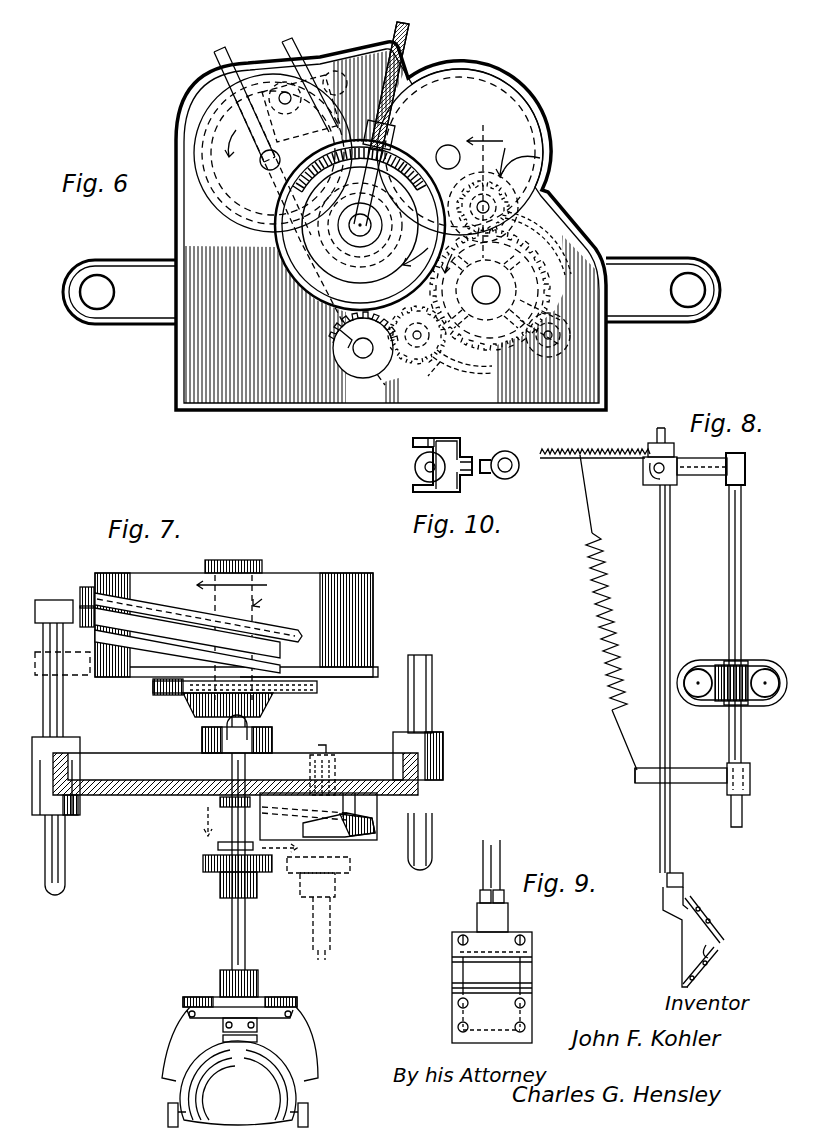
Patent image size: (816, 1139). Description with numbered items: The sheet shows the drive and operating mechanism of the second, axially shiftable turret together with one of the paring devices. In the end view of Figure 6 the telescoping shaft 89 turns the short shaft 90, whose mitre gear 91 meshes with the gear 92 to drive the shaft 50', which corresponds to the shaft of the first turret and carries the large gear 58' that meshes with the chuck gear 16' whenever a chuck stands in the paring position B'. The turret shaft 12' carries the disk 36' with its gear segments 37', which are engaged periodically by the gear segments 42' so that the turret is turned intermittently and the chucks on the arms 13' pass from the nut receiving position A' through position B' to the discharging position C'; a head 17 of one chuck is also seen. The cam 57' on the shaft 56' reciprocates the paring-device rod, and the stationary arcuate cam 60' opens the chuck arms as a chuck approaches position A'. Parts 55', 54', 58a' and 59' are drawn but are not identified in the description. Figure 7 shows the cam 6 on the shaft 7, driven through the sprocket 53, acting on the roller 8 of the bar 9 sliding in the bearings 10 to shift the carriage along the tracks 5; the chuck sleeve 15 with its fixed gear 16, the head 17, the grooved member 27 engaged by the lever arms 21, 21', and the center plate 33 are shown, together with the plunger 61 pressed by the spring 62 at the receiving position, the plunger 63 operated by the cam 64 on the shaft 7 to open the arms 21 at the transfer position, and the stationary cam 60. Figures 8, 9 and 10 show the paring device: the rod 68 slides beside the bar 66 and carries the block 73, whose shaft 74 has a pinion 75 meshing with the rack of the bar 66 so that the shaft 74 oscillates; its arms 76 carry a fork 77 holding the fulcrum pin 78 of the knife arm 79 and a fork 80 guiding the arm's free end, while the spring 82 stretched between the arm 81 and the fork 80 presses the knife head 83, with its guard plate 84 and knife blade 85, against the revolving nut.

In FIG. 6, the wheel 55' is at (273, 169).
In FIG. 6, the shaft 56' is at (299, 216).
In FIG. 6, the cam 57' is at (273, 153).
In FIG. 6, the large gear 58' is at (326, 225).
In FIG. 6, the pinion 58a' is at (360, 376).
In FIG. 6, the hub 54' is at (360, 237).
In FIG. 6, the shaft 50' is at (373, 232).
In FIG. 6, the gear 92 is at (327, 175).
In FIG. 6, the mitre gear 91 is at (393, 158).
In FIG. 6, the short shaft 90 is at (393, 127).
In FIG. 6, the telescoping shaft 89 is at (409, 36).
In FIG. 6, the ring 59' is at (461, 152).
In FIG. 6, the head 17 is at (469, 189).
In FIG. 7, the head 17 is at (276, 999).
In FIG. 6, the gear segments 42' is at (508, 182).
In FIG. 6, the nut receiving position A' is at (535, 167).
In FIG. 6, the gear segments 37' is at (538, 240).
In FIG. 6, the disk 36' is at (490, 290).
In FIG. 6, the shaft 12' is at (486, 290).
In FIG. 6, the arms 13' is at (486, 299).
In FIG. 6, the paring position B' is at (417, 353).
In FIG. 6, the fixed gear 16' is at (433, 381).
In FIG. 6, the stationary arcuate cam 60' is at (462, 375).
In FIG. 6, the discharging or transferring position C' is at (576, 328).
In FIG. 7, the tracks or rods 5 is at (432, 709).
In FIG. 7, the cam 6 is at (276, 628).
In FIG. 7, the shaft 7 is at (260, 595).
In FIG. 7, the roller 8 is at (79, 605).
In FIG. 7, the bar 9 is at (62, 716).
In FIG. 7, the bearings 10 is at (84, 822).
In FIG. 7, the sleeve 15 is at (257, 949).
In FIG. 6, the fixed gear 16 is at (433, 381).
In FIG. 7, the fixed gear 16 is at (220, 871).
In FIG. 7, the arm 21 is at (235, 1044).
In FIG. 7, the arm 21' is at (237, 1113).
In FIG. 7, the member 27 is at (226, 1015).
In FIG. 7, the center plate 33 is at (256, 1046).
In FIG. 7, the sprocket 53 is at (308, 695).
In FIG. 6, the stationary arcuate cam 60 is at (462, 375).
In FIG. 7, the stationary arcuate cam 60 is at (326, 827).
In FIG. 7, the plunger 61 is at (322, 747).
In FIG. 7, the spring 62 is at (336, 762).
In FIG. 7, the plunger 63 is at (252, 749).
In FIG. 7, the cam 64 is at (188, 713).
In FIG. 8, the bar 66 is at (770, 703).
In FIG. 8, the rod 68 is at (705, 703).
In FIG. 8, the head or block 73 is at (746, 662).
In FIG. 8, the shaft 74 is at (752, 750).
In FIG. 10, the shaft 74 is at (506, 474).
In FIG. 8, the pinion 75 is at (716, 664).
In FIG. 8, the arms 76 is at (704, 485).
In FIG. 10, the arms 76 is at (470, 459).
In FIG. 8, the fork 77 is at (657, 481).
In FIG. 10, the fork 77 is at (414, 491).
In FIG. 8, the pin 78 is at (650, 447).
In FIG. 10, the pin 78 is at (432, 441).
In FIG. 8, the knife arm 79 is at (677, 615).
In FIG. 9, the knife arm 79 is at (483, 880).
In FIG. 8, the fork 80 is at (650, 768).
In FIG. 8, the arm 81 is at (600, 464).
In FIG. 8, the extensible spring 82 is at (593, 591).
In FIG. 8, the knife head 83 is at (685, 948).
In FIG. 9, the knife head 83 is at (477, 987).
In FIG. 8, the guard plate 84 is at (712, 930).
In FIG. 9, the guard plate 84 is at (530, 970).
In FIG. 8, the knife blade 85 is at (715, 961).
In FIG. 9, the knife blade 85 is at (521, 1017).